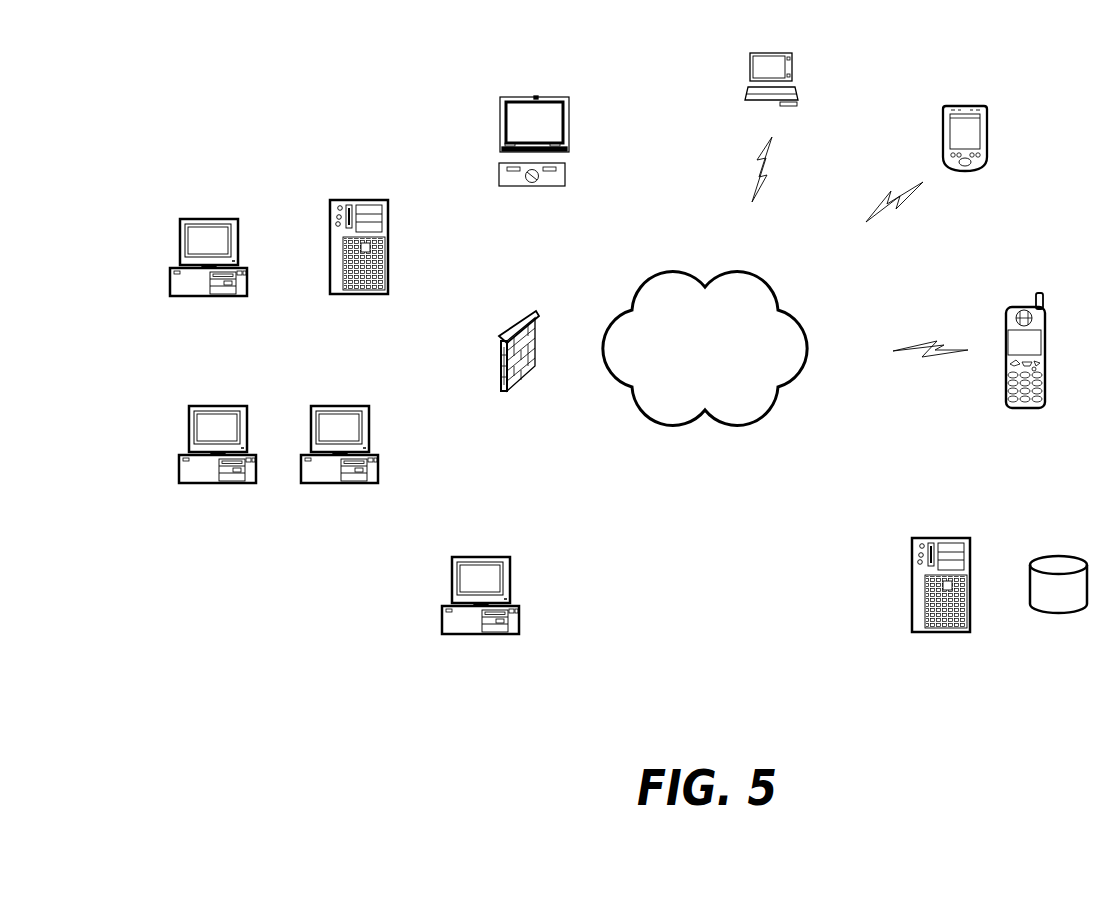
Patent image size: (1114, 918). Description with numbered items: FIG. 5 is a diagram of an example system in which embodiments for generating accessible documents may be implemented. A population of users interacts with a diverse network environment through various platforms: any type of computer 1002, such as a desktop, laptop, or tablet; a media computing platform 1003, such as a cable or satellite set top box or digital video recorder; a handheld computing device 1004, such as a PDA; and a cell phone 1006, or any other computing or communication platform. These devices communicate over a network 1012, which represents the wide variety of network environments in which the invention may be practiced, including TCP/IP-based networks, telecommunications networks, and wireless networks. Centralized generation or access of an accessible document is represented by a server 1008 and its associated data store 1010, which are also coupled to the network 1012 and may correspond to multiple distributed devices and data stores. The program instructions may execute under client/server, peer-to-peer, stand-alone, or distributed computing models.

The computer 1002 is at (178, 247).
The media computing platform 1003 is at (498, 170).
The handheld computing device 1004 is at (948, 108).
The cell phone 1006 is at (1010, 310).
The server 1008 is at (920, 538).
The data store 1010 is at (1060, 555).
The network 1012 is at (645, 283).